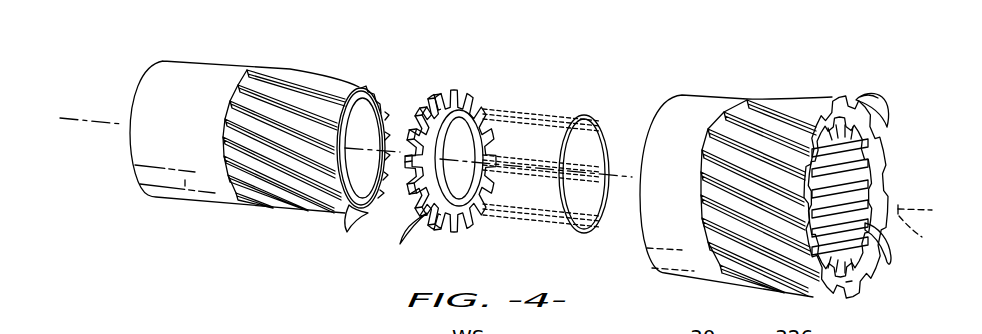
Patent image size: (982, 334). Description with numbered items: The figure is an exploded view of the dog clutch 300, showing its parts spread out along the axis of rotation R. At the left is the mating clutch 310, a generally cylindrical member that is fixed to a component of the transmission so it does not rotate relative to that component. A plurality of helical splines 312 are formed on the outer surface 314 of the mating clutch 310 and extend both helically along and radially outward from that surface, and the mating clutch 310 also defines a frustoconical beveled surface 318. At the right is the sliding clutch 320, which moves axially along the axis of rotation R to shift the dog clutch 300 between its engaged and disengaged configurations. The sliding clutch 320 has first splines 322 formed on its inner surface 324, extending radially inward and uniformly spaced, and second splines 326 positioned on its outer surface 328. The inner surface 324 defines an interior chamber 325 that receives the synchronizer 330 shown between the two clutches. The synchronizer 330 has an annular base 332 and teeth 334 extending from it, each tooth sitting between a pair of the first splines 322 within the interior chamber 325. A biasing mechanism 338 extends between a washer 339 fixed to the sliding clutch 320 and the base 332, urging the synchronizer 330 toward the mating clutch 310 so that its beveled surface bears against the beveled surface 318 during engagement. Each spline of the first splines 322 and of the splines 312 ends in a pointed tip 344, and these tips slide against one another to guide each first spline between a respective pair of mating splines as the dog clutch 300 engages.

The dog clutch 300 is at (856, 76).
The mating clutch 310 is at (193, 78).
The splines 312 is at (296, 116).
The outer surface 314 is at (188, 189).
The beveled surface 318 is at (380, 109).
The sliding clutch 320 is at (872, 200).
The first splines 322 is at (887, 255).
The inner surface 324 is at (843, 247).
The interior chamber 325 is at (857, 179).
The second splines 326 is at (892, 110).
The outer surface 328 is at (690, 93).
The synchronizer 330 is at (490, 136).
The base 332 is at (470, 182).
The teeth 334 is at (409, 242).
The biasing mechanism 338 is at (509, 106).
The washer 339 is at (581, 234).
The pointed tip 344 is at (341, 231).
The axis of rotation R is at (917, 231).